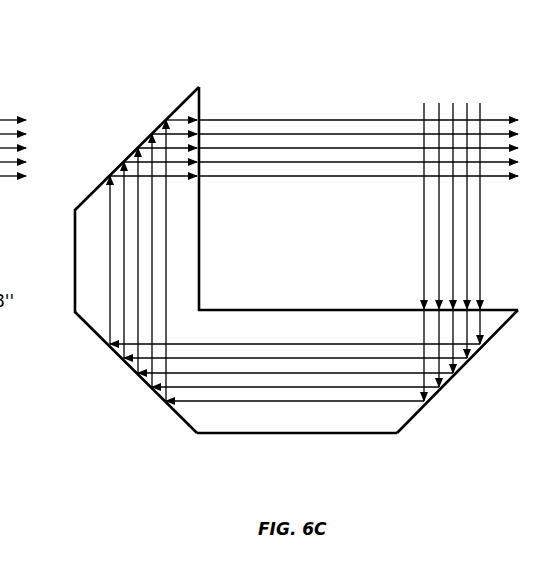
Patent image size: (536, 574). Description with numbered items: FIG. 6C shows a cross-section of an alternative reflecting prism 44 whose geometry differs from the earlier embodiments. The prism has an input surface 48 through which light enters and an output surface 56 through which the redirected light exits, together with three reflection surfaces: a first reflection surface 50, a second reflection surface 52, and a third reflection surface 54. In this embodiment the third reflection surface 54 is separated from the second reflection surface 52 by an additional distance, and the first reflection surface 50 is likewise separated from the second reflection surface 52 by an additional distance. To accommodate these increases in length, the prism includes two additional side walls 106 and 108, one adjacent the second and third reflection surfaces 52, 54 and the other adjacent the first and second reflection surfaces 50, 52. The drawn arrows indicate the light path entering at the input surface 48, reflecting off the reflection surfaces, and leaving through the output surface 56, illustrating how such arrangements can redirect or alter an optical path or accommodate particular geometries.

The reflecting prism 44 is at (186, 46).
The third reflection surface 54 is at (178, 105).
The output surface 56 is at (200, 104).
The input surface 48 is at (304, 308).
The first reflection surface 50 is at (414, 413).
The side wall 108 is at (296, 434).
The second reflection surface 52 is at (100, 338).
The side wall 106 is at (75, 255).